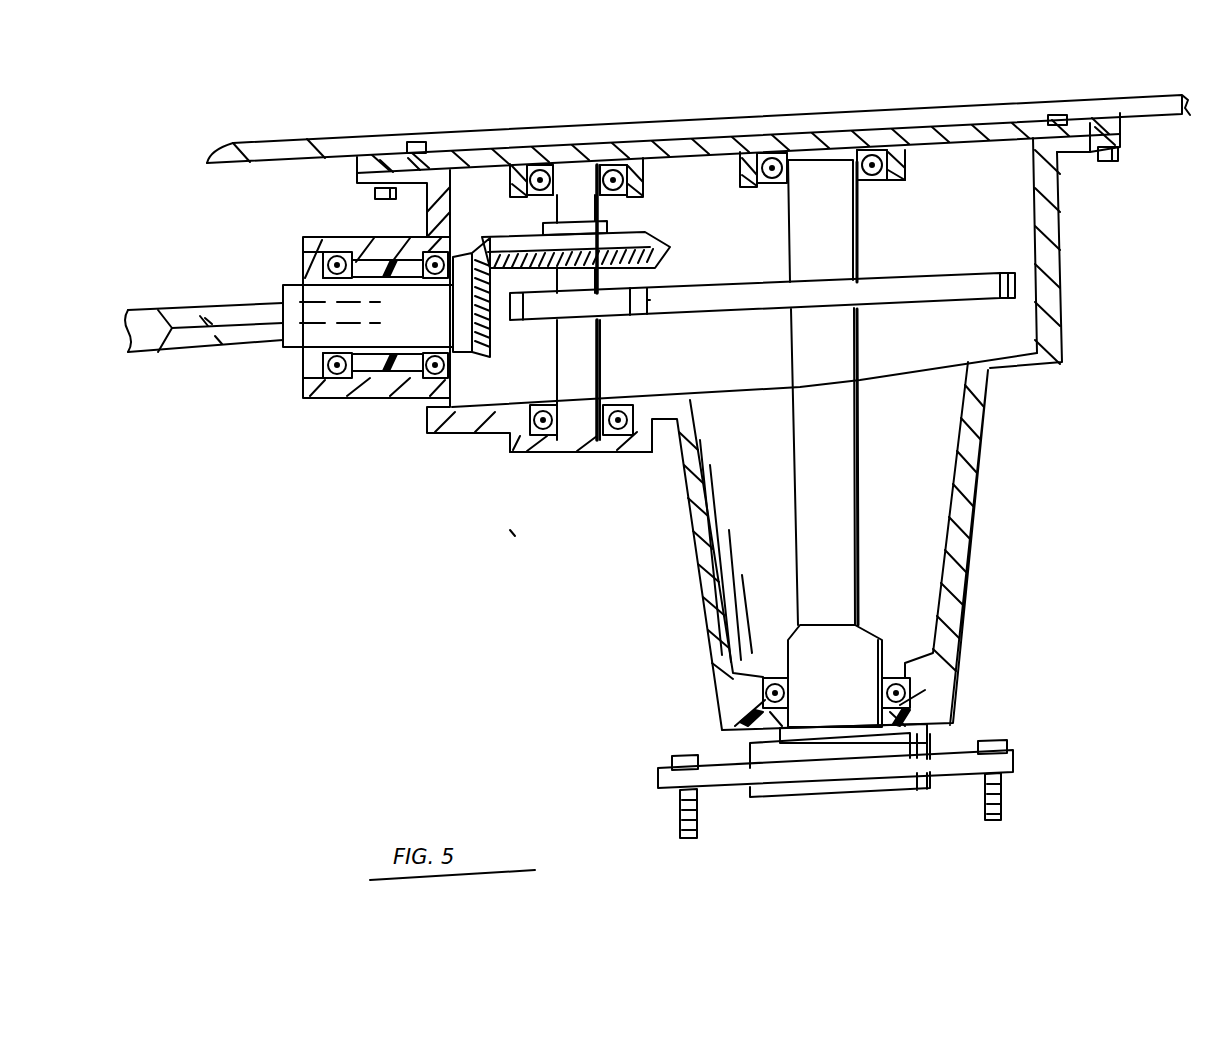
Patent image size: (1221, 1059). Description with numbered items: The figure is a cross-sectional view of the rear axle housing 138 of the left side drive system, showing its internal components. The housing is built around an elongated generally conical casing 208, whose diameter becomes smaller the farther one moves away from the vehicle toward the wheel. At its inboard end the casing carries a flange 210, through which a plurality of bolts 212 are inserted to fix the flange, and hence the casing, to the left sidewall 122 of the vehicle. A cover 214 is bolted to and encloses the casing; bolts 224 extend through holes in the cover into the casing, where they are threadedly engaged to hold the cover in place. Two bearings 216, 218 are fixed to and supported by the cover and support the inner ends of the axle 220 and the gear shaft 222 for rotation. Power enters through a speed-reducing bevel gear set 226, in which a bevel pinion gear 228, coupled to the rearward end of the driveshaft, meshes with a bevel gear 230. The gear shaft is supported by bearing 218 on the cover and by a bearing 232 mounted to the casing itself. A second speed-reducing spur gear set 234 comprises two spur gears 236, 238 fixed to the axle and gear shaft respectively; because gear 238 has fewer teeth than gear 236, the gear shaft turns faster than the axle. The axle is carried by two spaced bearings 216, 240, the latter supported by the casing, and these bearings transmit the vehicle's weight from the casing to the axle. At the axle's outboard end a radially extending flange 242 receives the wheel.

The left sidewall 122 is at (560, 126).
The rear axle housing 138 is at (512, 534).
The conical casing 208 is at (1010, 373).
The flange 210 is at (357, 182).
The bolts 212 is at (380, 200).
The cover 214 is at (928, 135).
The bearing 216 is at (770, 152).
The bearing 218 is at (612, 162).
The axle 220 is at (836, 247).
The gear shaft 222 is at (596, 350).
The bolts 224 is at (416, 142).
The bevel gear set 226 is at (512, 362).
The bevel pinion gear 228 is at (437, 327).
The bevel gear 230 is at (672, 240).
The bearing 232 is at (513, 456).
The spur gear set 234 is at (651, 342).
The spur gear 236 is at (881, 278).
The spur gear 238 is at (628, 282).
The bearing 240 is at (910, 698).
The flange 242 is at (962, 752).